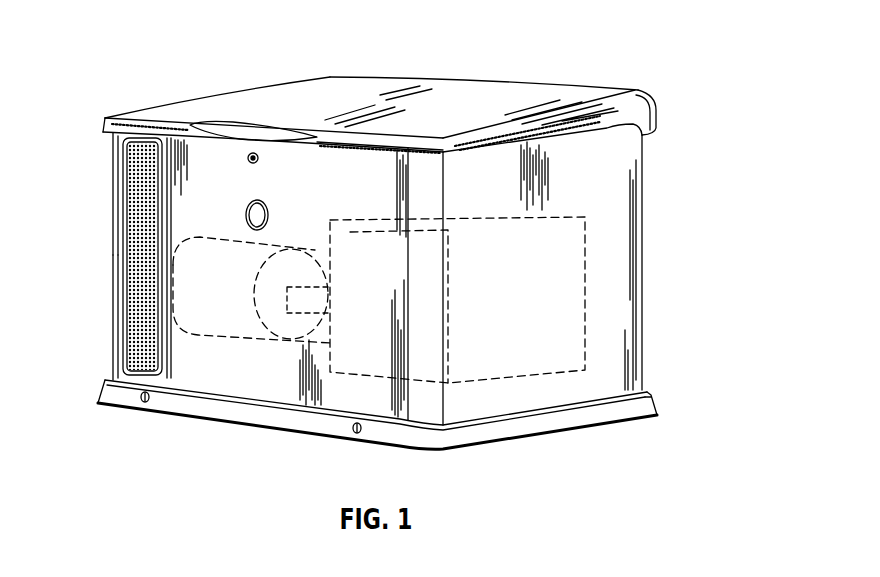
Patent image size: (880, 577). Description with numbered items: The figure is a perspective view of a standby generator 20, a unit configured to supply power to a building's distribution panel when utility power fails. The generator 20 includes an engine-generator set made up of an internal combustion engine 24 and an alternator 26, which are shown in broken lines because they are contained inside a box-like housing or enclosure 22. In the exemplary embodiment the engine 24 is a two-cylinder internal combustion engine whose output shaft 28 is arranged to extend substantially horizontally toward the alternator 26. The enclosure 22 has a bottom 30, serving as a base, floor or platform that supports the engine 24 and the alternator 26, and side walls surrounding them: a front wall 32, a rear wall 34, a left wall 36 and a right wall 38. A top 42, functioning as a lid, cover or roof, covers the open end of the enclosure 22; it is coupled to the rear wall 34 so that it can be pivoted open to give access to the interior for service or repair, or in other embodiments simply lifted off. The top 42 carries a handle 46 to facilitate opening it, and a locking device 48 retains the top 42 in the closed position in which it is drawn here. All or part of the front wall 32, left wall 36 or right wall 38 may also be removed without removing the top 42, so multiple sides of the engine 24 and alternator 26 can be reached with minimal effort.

The standby generator 20 is at (565, 46).
The enclosure 22 is at (652, 154).
The internal combustion engine 24 is at (572, 253).
The alternator 26 is at (165, 288).
The output shaft 28 is at (253, 346).
The bottom 30 is at (180, 403).
The front wall 32 is at (113, 206).
The rear wall 34 is at (642, 200).
The left wall 36 is at (113, 362).
The right wall 38 is at (612, 292).
The top 42 is at (314, 82).
The handle 46 is at (243, 127).
The locking device 48 is at (247, 158).